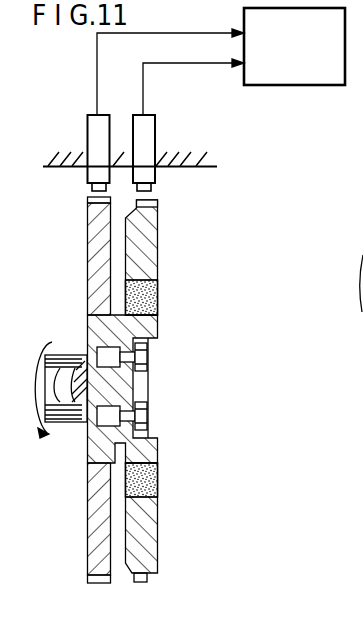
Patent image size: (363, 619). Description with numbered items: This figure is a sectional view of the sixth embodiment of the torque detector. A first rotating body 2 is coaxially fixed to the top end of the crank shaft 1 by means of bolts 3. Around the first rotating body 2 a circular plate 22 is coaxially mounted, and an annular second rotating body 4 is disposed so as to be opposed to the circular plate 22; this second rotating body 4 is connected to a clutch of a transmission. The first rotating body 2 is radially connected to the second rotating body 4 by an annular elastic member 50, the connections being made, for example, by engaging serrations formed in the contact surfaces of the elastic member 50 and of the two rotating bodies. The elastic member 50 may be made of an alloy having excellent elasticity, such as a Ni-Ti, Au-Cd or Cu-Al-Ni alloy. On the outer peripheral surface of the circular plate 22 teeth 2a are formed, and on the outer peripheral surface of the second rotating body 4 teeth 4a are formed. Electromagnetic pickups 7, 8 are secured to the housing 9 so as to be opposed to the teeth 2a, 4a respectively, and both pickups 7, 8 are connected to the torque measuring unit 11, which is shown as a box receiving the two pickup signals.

The crank shaft 1 is at (60, 425).
The first rotating body 2 is at (146, 452).
The teeth 2a is at (95, 580).
The bolts 3 is at (147, 417).
The second rotating body 4 is at (143, 548).
The teeth 4a is at (145, 586).
The electromagnetic pickup 7 is at (96, 133).
The electromagnetic pickup 8 is at (141, 137).
The housing 9 is at (193, 167).
The torque measuring unit 11 is at (297, 77).
The circular plate 22 is at (97, 528).
The annular elastic member 50 is at (150, 482).